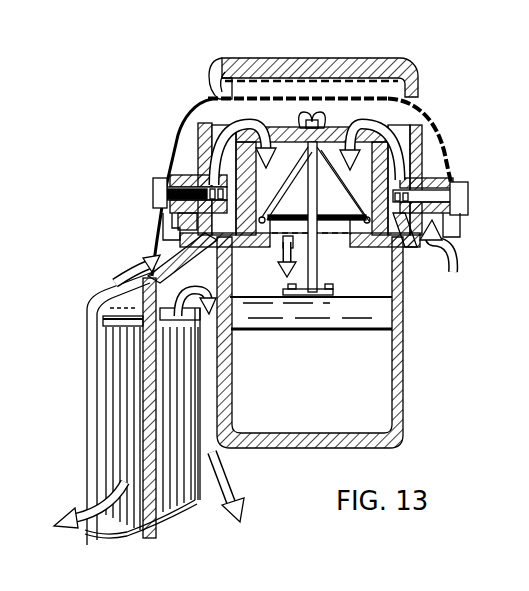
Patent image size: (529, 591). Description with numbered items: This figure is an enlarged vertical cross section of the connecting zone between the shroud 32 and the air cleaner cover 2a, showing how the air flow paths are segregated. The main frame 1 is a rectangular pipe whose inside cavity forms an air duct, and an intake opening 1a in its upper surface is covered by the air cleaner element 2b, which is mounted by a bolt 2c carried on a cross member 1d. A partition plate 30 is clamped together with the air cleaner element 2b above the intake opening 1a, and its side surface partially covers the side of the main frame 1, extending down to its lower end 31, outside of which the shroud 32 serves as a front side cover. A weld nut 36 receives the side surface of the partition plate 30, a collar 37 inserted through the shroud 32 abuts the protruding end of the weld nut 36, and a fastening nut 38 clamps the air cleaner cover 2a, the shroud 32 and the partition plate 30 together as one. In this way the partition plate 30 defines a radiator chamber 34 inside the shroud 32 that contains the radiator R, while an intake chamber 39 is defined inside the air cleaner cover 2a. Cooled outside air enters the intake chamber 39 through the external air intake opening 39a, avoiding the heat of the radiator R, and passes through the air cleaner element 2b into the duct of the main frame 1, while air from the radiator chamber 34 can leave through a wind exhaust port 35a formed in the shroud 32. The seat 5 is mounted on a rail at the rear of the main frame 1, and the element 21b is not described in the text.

The main frame 1 is at (400, 407).
The intake opening 1a is at (342, 243).
The cross member 1d is at (308, 323).
The air cleaner cover 2a is at (438, 108).
The air cleaner element 2b is at (343, 132).
The bolt 2c is at (310, 114).
The seat 5 is at (373, 62).
The inner cylinder block 21b is at (227, 160).
The partition plate 30 is at (423, 157).
The lower end of partition plate 31 is at (148, 450).
The shroud 32 is at (145, 532).
The radiator chamber 34 is at (130, 297).
The wind exhaust port 35a is at (102, 362).
The weld nut 36 is at (212, 168).
The collar 37 is at (192, 180).
The fastening nut 38 is at (152, 200).
The intake chamber 39 is at (260, 126).
The air intake opening 39a is at (182, 248).
The radiator R is at (105, 423).